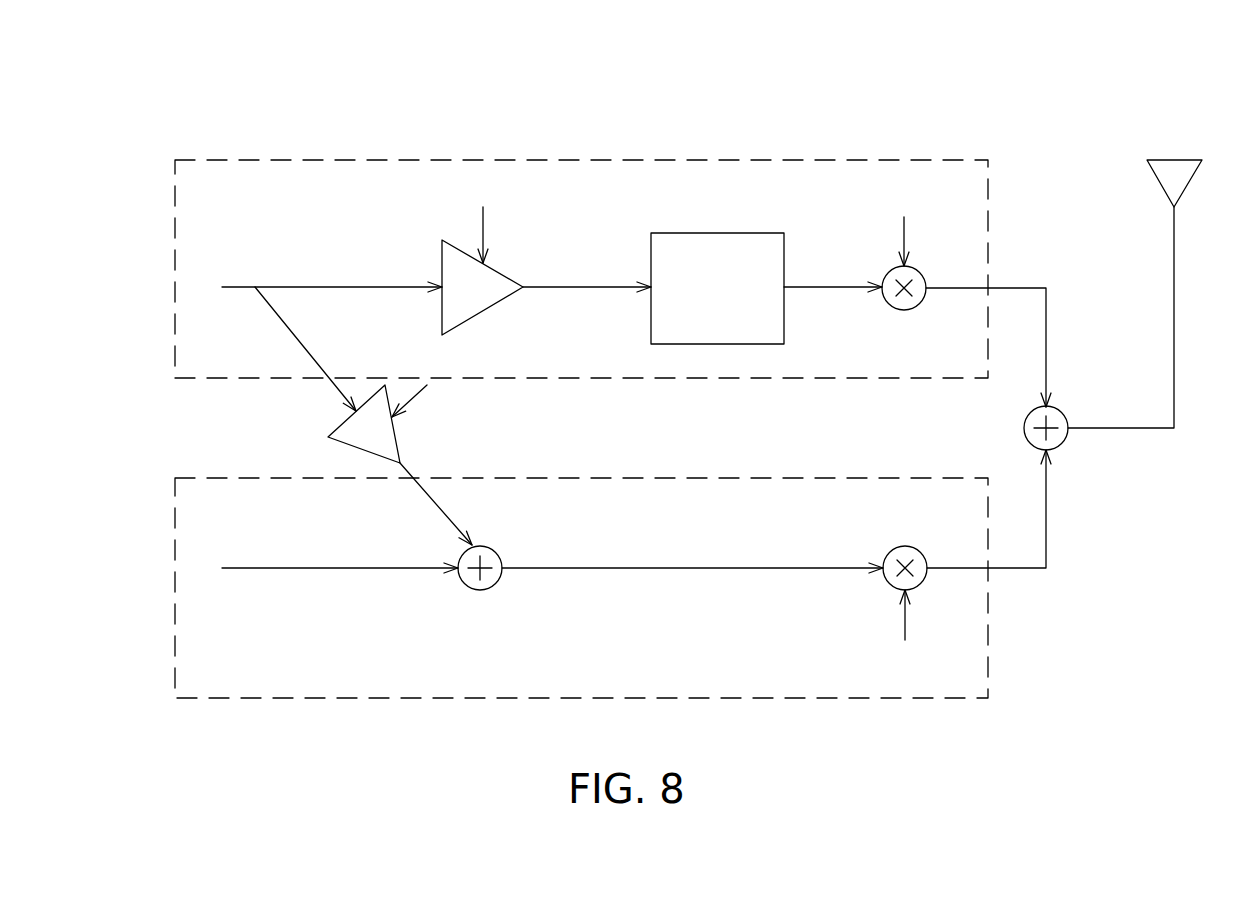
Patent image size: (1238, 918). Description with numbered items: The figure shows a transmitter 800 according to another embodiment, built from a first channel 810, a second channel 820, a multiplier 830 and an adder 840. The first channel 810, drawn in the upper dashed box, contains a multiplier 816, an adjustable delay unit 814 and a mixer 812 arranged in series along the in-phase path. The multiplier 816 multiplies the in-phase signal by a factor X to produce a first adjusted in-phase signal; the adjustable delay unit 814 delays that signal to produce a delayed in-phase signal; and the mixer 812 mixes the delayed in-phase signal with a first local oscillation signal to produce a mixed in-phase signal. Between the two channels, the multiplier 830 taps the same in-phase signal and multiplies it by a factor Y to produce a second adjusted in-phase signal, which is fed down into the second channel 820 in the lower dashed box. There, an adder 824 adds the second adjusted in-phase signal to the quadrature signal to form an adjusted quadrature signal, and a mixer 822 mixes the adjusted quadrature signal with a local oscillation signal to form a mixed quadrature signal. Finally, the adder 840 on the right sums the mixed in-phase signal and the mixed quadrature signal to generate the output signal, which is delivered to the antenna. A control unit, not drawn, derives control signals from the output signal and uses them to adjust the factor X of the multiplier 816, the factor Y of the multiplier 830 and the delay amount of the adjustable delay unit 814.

The transmitter 800 is at (1042, 80).
The first channel 810 is at (175, 201).
The mixer 812 is at (917, 305).
The adjustable delay unit 814 is at (716, 232).
The multiplier 816 is at (483, 310).
The second channel 820 is at (175, 521).
The mixer 822 is at (921, 548).
The adder 824 is at (494, 585).
The multiplier 830 is at (348, 447).
The adder 840 is at (1056, 446).